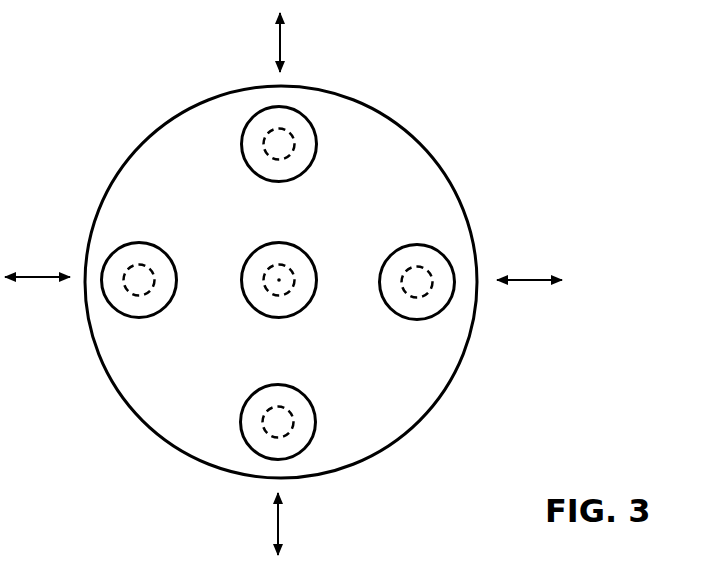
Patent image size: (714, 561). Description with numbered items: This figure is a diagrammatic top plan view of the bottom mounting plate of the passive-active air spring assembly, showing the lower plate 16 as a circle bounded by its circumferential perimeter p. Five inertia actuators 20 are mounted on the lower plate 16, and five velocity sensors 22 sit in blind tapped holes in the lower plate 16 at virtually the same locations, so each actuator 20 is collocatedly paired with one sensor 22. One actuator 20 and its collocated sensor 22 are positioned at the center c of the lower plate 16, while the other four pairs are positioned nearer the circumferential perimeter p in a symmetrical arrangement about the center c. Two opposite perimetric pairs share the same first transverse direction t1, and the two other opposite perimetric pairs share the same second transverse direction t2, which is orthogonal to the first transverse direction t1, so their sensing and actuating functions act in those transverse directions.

The lower plate 16 is at (148, 180).
The inertia actuator 20 is at (295, 162).
The velocity sensor 22 is at (274, 145).
The center c is at (279, 280).
The circumferential perimeter p is at (452, 172).
The first transverse direction t1 is at (283, 260).
The second transverse direction t2 is at (296, 284).